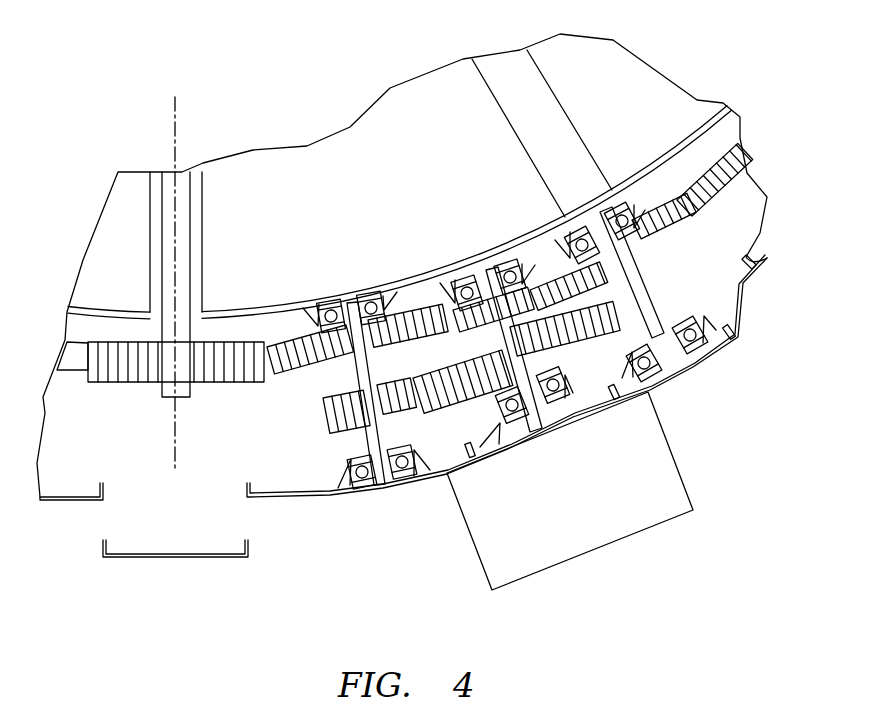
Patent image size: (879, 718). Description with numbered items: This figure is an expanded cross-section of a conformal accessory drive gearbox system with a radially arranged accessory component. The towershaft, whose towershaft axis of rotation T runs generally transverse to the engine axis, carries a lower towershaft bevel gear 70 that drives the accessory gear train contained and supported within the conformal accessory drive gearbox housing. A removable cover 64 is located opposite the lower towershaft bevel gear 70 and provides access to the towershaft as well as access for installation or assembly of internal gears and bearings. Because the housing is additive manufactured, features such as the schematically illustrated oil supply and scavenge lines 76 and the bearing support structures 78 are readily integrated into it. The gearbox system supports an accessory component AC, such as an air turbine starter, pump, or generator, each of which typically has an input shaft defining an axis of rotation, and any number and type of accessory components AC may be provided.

The oil supply and scavenge lines 76 is at (687, 136).
The bearing support structures 78 is at (628, 202).
The lower towershaft bevel gear 70 is at (207, 372).
The removable cover 64 is at (187, 557).
The accessory component AC is at (640, 518).
The towershaft axis of rotation T is at (175, 110).